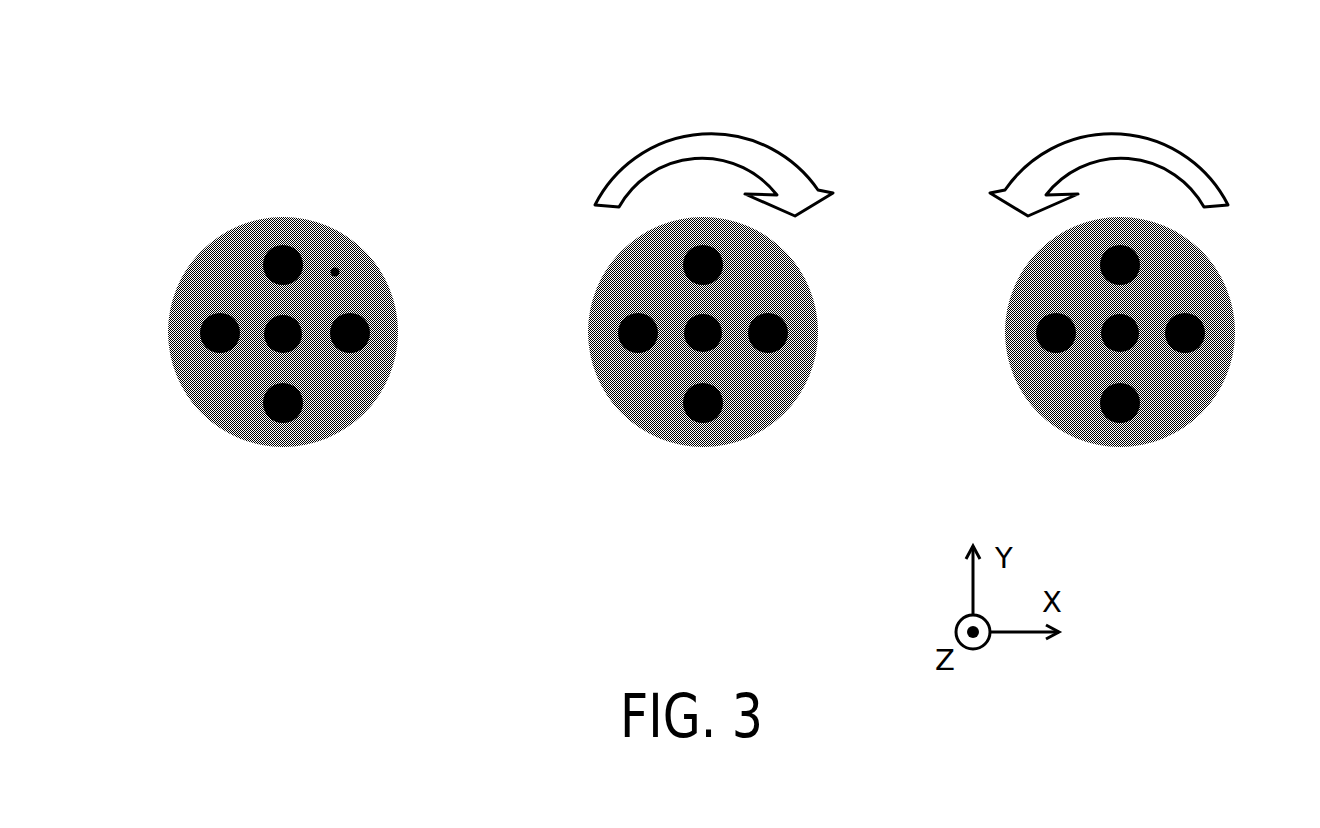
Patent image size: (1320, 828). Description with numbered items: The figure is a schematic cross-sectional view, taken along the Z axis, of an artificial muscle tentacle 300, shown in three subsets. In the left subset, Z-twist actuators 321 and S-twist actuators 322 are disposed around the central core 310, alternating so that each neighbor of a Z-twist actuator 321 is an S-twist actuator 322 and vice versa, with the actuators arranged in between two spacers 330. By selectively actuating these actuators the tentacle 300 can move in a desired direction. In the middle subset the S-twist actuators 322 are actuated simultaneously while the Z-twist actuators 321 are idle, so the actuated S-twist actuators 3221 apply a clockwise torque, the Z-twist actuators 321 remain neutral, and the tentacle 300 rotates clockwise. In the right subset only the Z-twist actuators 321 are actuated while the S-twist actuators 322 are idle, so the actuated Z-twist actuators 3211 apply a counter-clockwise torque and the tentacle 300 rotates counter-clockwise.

The artificial muscle tentacle 300 is at (1184, 59).
The central core 310 is at (263, 321).
The Z-twist actuators 321 is at (267, 383).
The S-twist actuators 322 is at (341, 358).
The spacers 330 is at (335, 272).
The actuated Z-twist actuators 3211 is at (1089, 272).
The actuated S-twist actuators 3221 is at (762, 359).